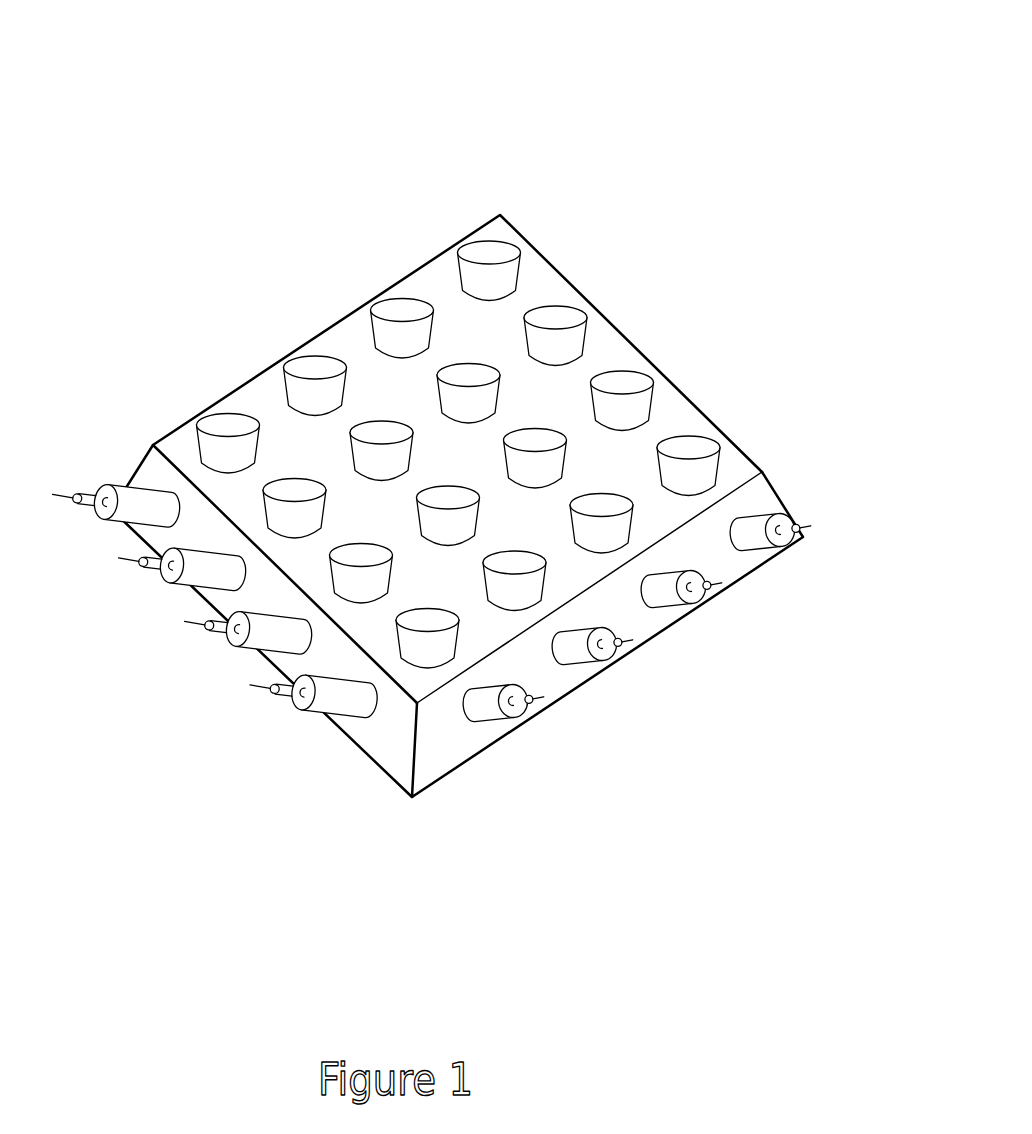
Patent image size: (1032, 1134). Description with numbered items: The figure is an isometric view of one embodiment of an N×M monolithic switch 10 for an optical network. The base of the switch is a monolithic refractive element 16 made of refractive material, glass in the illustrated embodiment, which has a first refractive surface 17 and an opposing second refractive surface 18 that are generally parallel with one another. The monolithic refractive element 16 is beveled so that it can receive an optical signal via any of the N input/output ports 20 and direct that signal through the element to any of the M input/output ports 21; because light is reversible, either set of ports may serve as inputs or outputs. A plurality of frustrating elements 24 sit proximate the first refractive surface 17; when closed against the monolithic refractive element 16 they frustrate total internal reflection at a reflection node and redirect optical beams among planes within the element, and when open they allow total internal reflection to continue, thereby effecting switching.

The N×M monolithic switch 10 is at (645, 106).
The monolithic refractive element 16 is at (500, 532).
The first refractive surface 17 is at (423, 681).
The second refractive surface 18 is at (446, 775).
The N input/output ports 20 is at (124, 523).
The M input/output ports 21 is at (752, 545).
The frustrating elements 24 is at (223, 425).